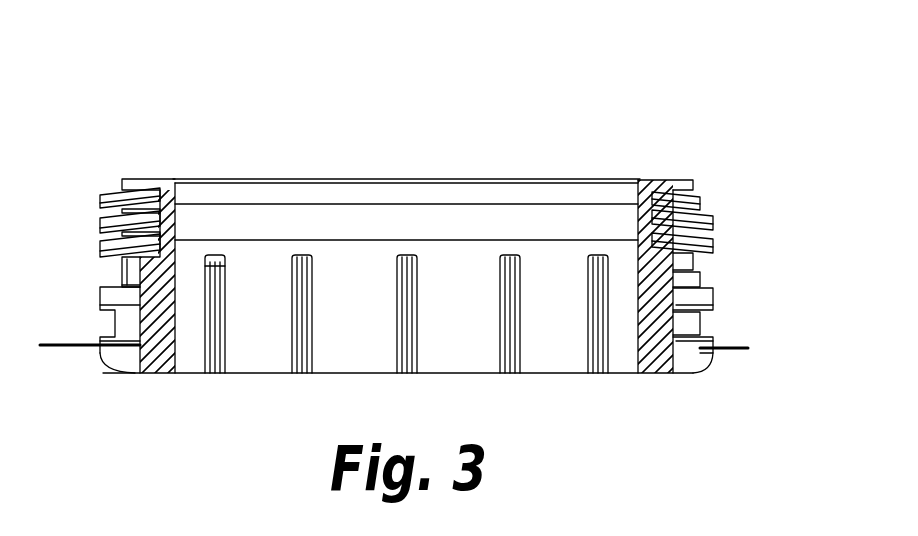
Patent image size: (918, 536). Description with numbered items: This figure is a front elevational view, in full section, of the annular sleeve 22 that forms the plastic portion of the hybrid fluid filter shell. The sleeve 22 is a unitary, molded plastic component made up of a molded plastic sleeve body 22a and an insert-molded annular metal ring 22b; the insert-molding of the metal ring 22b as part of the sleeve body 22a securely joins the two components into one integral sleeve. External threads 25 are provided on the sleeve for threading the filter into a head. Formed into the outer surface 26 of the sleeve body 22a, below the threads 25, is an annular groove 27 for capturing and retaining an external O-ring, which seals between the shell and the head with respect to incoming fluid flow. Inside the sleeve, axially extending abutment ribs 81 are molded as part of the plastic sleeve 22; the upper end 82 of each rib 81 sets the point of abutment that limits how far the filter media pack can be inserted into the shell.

The annular sleeve 22 is at (442, 235).
The sleeve body 22a is at (175, 222).
The annular metal ring 22b is at (82, 350).
The external threads 25 is at (707, 232).
The outer surface 26 is at (121, 273).
The annular groove 27 is at (712, 319).
The abutment ribs 81 is at (217, 320).
The upper end 82 is at (216, 256).